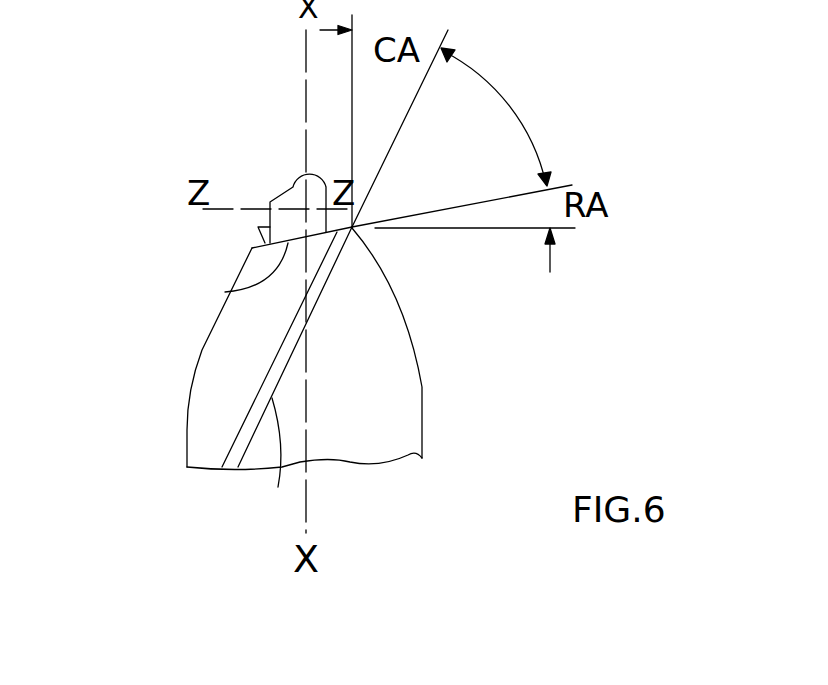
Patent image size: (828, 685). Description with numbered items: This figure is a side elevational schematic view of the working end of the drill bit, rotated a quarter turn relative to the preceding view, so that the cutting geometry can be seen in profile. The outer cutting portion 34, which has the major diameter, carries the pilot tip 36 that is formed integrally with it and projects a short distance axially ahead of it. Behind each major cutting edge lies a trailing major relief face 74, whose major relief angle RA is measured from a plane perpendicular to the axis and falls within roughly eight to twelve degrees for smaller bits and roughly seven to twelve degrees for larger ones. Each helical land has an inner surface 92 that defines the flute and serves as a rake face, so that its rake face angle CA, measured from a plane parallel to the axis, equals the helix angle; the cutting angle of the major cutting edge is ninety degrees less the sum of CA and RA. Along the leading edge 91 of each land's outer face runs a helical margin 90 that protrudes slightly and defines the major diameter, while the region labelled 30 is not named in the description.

The body 30 is at (402, 417).
The outer cutting portion 34 is at (230, 362).
The pilot tip 36 is at (246, 164).
The major relief face 74 is at (225, 292).
The helical margin 90 is at (250, 430).
The leading edge 91 is at (261, 464).
The land inner surface 92 is at (383, 370).